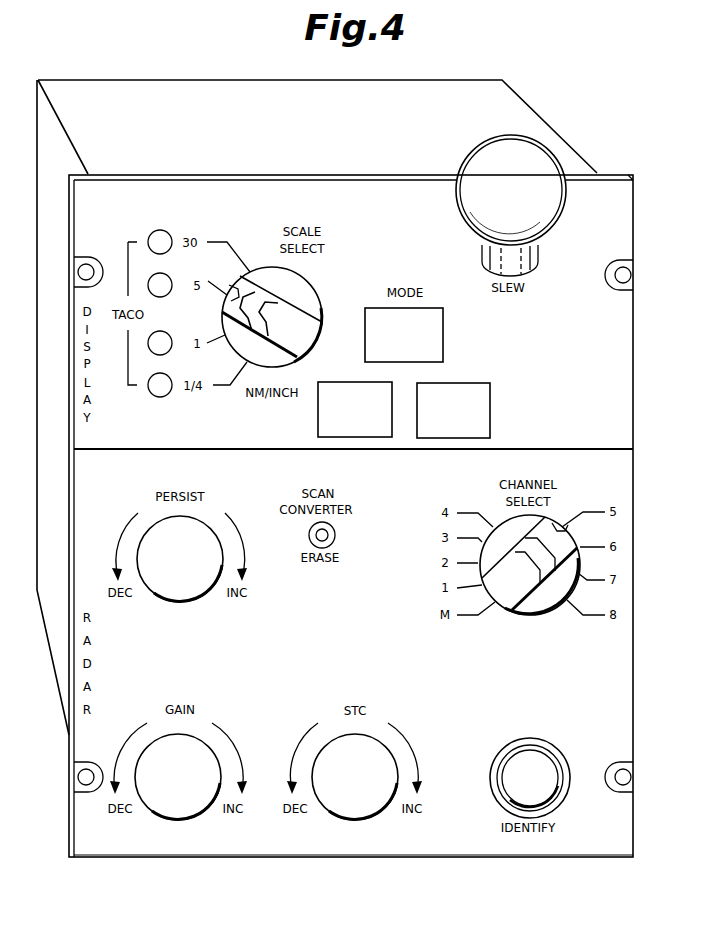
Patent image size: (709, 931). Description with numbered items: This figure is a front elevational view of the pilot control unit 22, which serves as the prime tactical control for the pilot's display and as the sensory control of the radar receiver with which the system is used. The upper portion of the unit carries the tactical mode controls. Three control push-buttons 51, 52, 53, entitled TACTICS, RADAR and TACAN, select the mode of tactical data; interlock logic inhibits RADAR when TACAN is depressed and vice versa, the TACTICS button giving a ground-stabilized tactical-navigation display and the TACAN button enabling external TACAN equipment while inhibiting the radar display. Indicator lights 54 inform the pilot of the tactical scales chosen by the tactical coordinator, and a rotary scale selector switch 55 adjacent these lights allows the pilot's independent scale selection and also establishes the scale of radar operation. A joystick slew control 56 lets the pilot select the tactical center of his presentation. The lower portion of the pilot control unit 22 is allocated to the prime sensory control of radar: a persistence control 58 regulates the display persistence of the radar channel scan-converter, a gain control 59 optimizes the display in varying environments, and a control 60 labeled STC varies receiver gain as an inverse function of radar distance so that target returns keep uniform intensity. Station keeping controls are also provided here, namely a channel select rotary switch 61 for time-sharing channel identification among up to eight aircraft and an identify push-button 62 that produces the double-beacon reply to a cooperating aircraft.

The pilot control unit 22 is at (567, 140).
The joystick slew control 56 is at (550, 230).
The indicator lights 54 is at (168, 233).
The rotary scale selector switch 55 is at (313, 285).
The TACTICS control push-button 51 is at (443, 335).
The RADAR control push-button 52 is at (318, 428).
The TACAN control push-button 53 is at (490, 425).
The persistence control 58 is at (187, 602).
The channel select rotary switch 61 is at (528, 615).
The gain control 59 is at (190, 733).
The STC control 60 is at (362, 733).
The identify push-button 62 is at (538, 740).